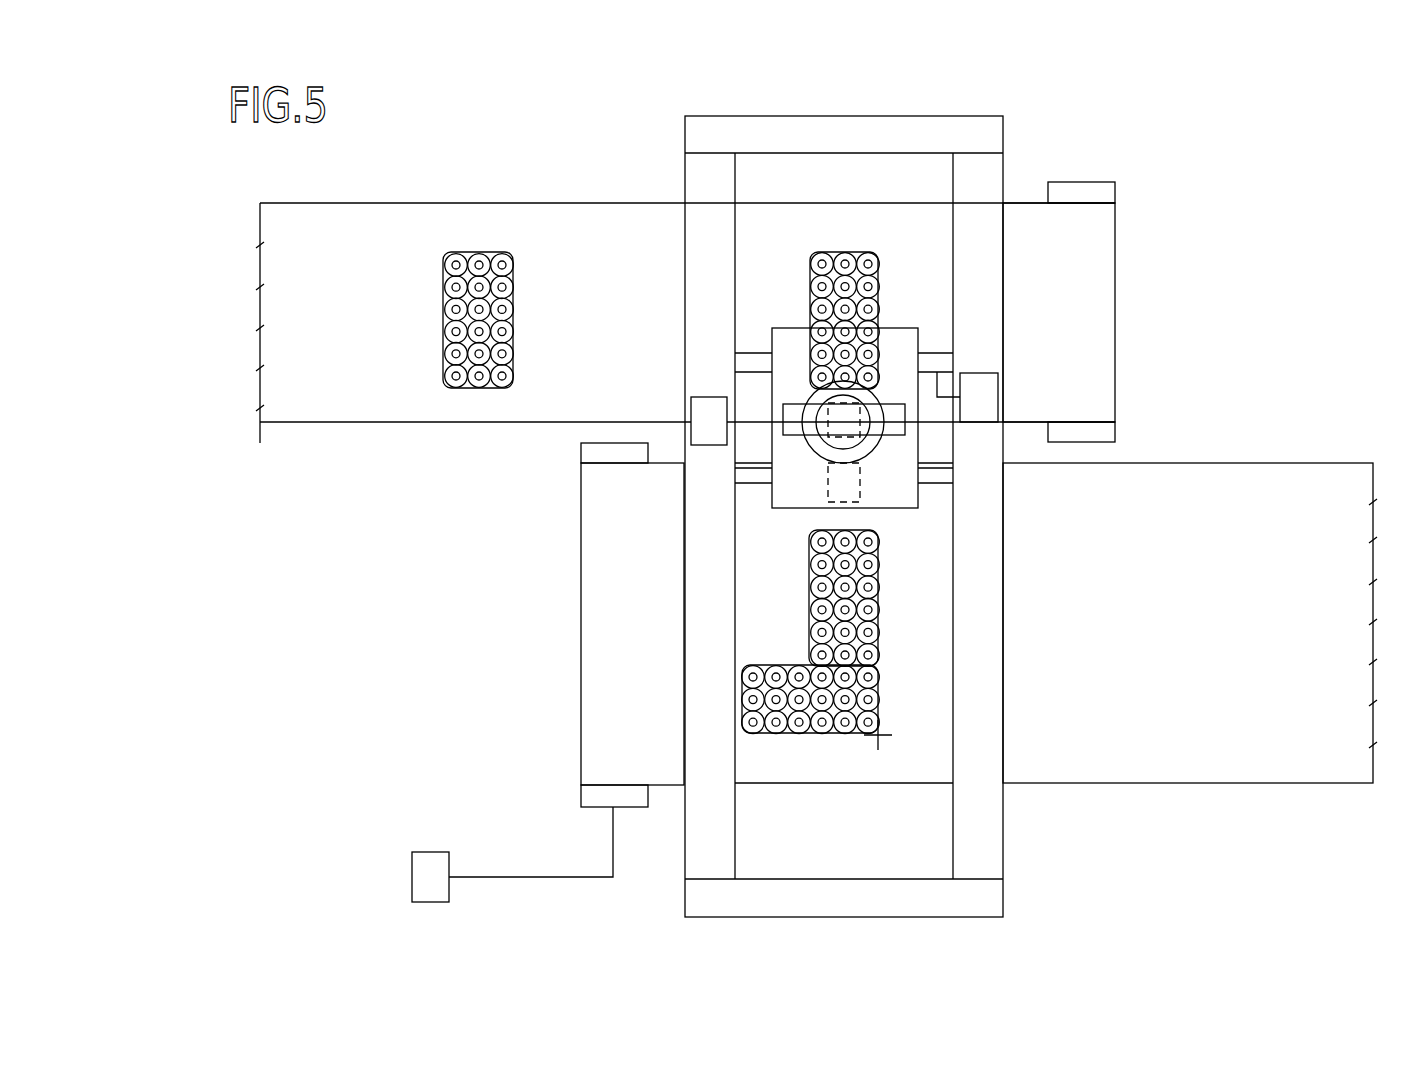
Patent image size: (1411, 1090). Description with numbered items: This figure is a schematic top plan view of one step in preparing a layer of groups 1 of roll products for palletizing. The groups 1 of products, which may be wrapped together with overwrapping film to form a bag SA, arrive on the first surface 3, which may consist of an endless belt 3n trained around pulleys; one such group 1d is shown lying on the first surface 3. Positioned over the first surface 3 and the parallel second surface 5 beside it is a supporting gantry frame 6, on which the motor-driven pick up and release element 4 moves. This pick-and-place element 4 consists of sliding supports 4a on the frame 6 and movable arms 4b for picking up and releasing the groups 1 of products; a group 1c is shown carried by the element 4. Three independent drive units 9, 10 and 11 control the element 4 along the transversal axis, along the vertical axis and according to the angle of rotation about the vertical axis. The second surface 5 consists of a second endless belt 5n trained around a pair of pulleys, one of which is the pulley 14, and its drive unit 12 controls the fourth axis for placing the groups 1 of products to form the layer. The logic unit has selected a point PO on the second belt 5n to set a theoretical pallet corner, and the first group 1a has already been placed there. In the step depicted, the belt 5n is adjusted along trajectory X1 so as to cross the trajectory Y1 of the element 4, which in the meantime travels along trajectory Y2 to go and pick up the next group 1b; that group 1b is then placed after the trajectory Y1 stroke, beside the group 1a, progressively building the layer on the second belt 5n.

The group of products 1 is at (483, 256).
The group of products 1a is at (792, 722).
The group of products 1b is at (868, 587).
The group of products 1c is at (855, 250).
The group of products 1d is at (442, 310).
The first surface 3 is at (308, 360).
The endless belt 3n is at (312, 407).
The motor-driven pick up and release element 4 is at (918, 323).
The sliding supports 4a is at (748, 356).
The movable arms 4b is at (845, 478).
The second surface 5 is at (607, 507).
The second endless belt 5n is at (607, 606).
The supporting frame 6 is at (686, 148).
The drive unit 9 is at (973, 397).
The drive unit 10 is at (866, 440).
The drive unit 11 is at (702, 408).
The drive unit 12 is at (430, 873).
The pulley 14 is at (600, 797).
The bag SA is at (443, 275).
The point P0 PO is at (878, 738).
The direction X1 is at (1257, 625).
The direction Y1 is at (1056, 723).
The direction Y2 is at (1056, 580).